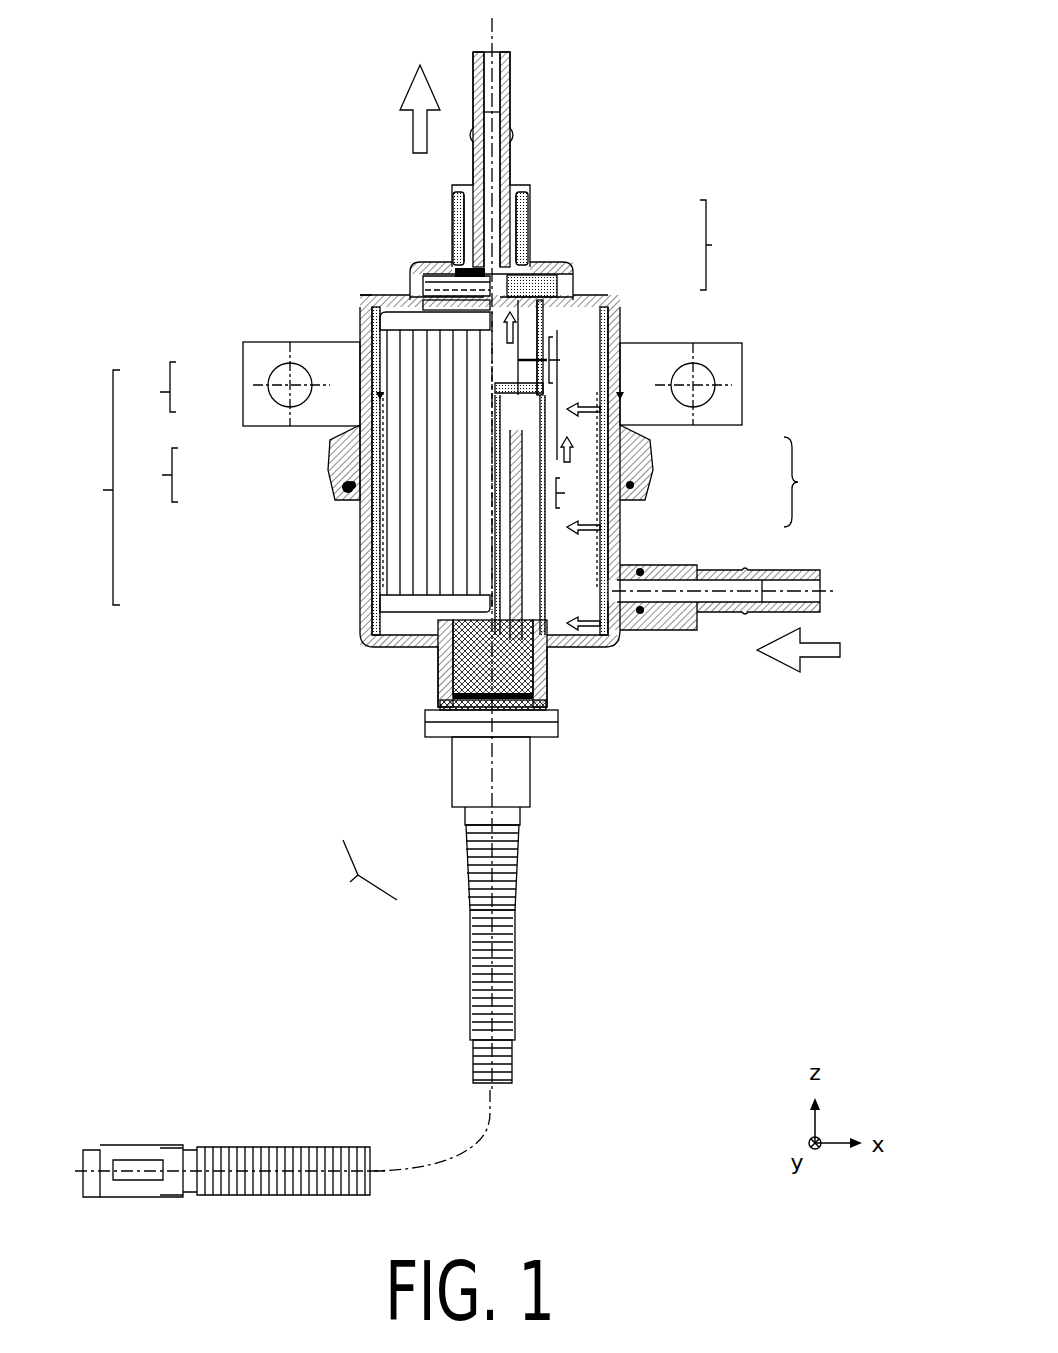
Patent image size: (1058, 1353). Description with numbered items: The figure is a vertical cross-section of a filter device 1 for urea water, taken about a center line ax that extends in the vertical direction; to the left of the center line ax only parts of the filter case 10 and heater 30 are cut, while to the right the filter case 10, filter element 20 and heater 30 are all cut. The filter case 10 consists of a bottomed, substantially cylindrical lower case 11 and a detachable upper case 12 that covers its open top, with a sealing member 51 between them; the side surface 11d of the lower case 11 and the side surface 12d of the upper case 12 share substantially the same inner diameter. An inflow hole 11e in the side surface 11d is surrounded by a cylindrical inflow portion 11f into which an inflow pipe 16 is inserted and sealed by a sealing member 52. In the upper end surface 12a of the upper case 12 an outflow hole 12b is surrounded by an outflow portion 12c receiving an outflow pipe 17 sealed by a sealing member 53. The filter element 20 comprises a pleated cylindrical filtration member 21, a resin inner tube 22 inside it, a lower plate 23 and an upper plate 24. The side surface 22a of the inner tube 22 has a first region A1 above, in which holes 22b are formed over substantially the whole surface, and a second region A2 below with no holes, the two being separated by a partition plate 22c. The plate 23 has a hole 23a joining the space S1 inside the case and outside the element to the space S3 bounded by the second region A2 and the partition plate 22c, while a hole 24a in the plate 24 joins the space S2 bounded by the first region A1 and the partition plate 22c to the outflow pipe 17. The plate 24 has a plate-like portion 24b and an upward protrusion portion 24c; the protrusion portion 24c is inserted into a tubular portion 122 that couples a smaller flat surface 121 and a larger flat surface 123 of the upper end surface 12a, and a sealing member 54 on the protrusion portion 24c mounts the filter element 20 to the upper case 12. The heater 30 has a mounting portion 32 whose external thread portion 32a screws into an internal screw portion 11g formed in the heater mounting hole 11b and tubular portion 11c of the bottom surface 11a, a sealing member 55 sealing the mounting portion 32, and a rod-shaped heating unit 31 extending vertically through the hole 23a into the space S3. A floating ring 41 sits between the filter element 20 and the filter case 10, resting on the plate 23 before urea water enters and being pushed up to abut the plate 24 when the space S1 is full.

The filter device 1 is at (732, 13).
The center line ax is at (488, 38).
The filter case 10 is at (811, 482).
The lower case 11 is at (568, 566).
The bottom surface 11a is at (605, 655).
The heater mounting hole 11b is at (530, 657).
The tubular portion 11c is at (549, 722).
The side surface 11d is at (623, 523).
The inflow hole 11e is at (632, 632).
The inflow portion 11f is at (680, 631).
The internal screw portion 11g is at (532, 712).
The upper case 12 is at (655, 442).
The upper end surface 12a is at (588, 245).
The outflow hole 12b is at (531, 235).
The outflow portion 12c is at (530, 212).
The side surface 12d is at (742, 355).
The flat surface 121 is at (538, 265).
The tubular portion 122 is at (557, 282).
The flat surface 123 is at (565, 300).
The inflow pipe 16 is at (807, 567).
The outflow pipe 17 is at (512, 75).
The filter element 20 is at (86, 487).
The filtration member 21 is at (417, 500).
The inner tube 22 is at (468, 452).
The side surface 22a is at (540, 430).
The hole 22b is at (548, 352).
The partition plate 22c is at (545, 395).
The plate 23 is at (405, 602).
The hole 23a is at (516, 700).
The plate 24 is at (273, 363).
The hole 24a is at (500, 347).
The plate-like portion 24b is at (430, 318).
The protrusion portion 24c is at (395, 300).
The heater 30 is at (436, 851).
The heating unit 31 is at (482, 803).
The mounting portion 32 is at (453, 700).
The external thread portion 32a is at (438, 670).
The ring 41 is at (604, 372).
The sealing member 51 is at (343, 490).
The sealing member 52 is at (690, 562).
The sealing member 53 is at (484, 270).
The sealing member 54 is at (443, 287).
The sealing member 55 is at (447, 717).
The first region A1 is at (574, 360).
The second region A2 is at (579, 492).
The space S1 is at (383, 625).
The space S2 is at (470, 290).
The space S3 is at (560, 432).